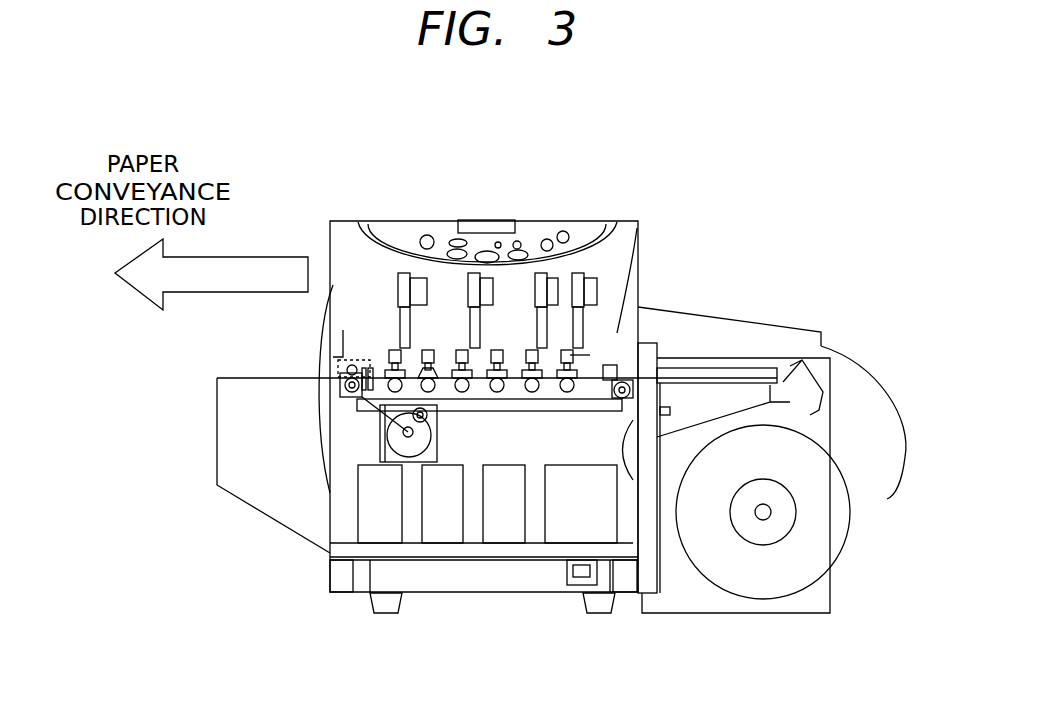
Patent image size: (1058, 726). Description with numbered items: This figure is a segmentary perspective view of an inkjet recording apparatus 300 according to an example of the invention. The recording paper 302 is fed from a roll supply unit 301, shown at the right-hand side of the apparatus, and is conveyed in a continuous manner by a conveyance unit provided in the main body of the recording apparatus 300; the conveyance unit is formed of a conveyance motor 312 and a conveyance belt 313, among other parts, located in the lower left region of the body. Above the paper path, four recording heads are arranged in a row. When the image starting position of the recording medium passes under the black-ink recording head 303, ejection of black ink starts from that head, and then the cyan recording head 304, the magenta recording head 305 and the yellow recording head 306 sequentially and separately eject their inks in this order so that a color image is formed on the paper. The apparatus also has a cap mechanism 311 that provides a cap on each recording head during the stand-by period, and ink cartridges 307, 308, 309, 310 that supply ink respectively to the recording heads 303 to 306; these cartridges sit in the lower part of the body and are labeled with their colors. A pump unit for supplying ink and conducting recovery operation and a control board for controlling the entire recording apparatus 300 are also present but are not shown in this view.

The recording apparatus 300 is at (333, 262).
The roll supply unit 301 is at (765, 533).
The recording paper 302 is at (840, 518).
The black-ink recording head 303 is at (617, 333).
The cyan recording head 304 is at (548, 287).
The magenta recording head 305 is at (482, 283).
The yellow recording head 306 is at (413, 285).
The ink cartridge 307 is at (593, 533).
The ink cartridge 308 is at (507, 533).
The ink cartridge 309 is at (440, 533).
The ink cartridge 310 is at (378, 530).
The cap mechanism 311 is at (580, 353).
The conveyance motor 312 is at (385, 438).
The conveyance belt 313 is at (380, 407).